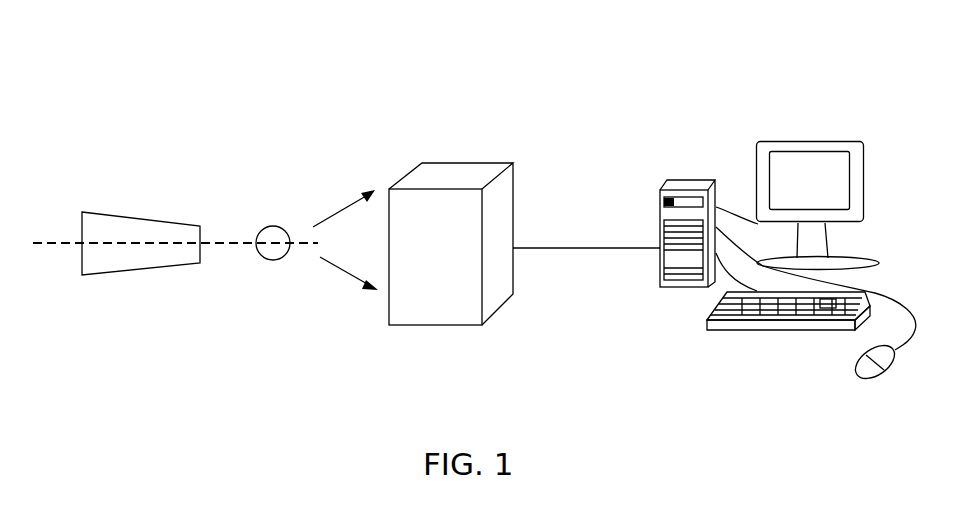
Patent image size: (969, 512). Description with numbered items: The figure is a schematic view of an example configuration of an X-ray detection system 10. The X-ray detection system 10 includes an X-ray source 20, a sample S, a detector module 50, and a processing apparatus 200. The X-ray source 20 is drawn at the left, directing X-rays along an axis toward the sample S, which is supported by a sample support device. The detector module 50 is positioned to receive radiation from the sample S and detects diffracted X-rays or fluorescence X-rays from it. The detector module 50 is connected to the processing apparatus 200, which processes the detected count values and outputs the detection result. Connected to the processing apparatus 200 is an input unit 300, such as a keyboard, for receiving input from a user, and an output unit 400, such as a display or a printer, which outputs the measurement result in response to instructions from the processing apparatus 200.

The X-ray detection system 10 is at (496, 92).
The X-ray source 20 is at (145, 269).
The sample S is at (276, 260).
The detector module 50 is at (515, 217).
The processing apparatus 200 is at (693, 180).
The input unit 300 is at (707, 323).
The output unit 400 is at (866, 170).